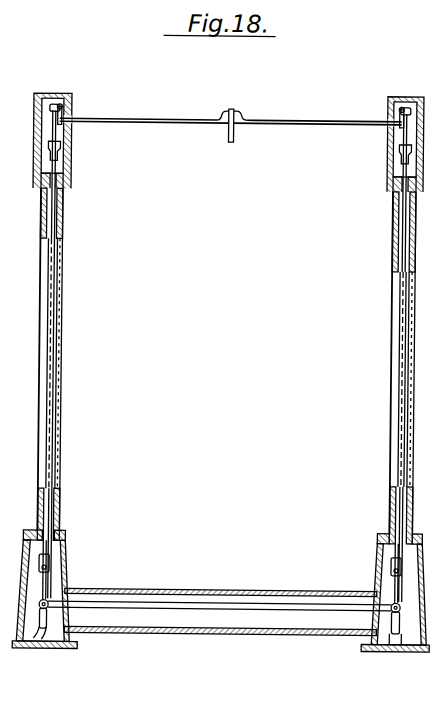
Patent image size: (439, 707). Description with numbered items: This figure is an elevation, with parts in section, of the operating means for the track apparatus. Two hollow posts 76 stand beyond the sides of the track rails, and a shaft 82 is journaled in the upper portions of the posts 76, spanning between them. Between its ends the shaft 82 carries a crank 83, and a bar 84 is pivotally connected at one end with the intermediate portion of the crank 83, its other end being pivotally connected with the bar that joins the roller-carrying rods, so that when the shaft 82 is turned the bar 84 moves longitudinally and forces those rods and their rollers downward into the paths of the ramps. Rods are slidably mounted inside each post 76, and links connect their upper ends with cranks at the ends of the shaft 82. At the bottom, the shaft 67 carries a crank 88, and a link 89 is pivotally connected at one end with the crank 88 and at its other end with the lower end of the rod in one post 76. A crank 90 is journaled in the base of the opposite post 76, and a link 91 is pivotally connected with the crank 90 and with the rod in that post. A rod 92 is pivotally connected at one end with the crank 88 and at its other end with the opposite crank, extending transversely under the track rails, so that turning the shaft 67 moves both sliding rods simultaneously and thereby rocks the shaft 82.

The shaft 67 is at (46, 622).
The post 76 is at (55, 346).
The shaft 82 is at (115, 121).
The crank 83 is at (233, 114).
The bar 84 is at (231, 130).
The crank 88 is at (52, 617).
The link 89 is at (49, 572).
The crank 90 is at (394, 626).
The link 91 is at (395, 583).
The rod 92 is at (181, 608).